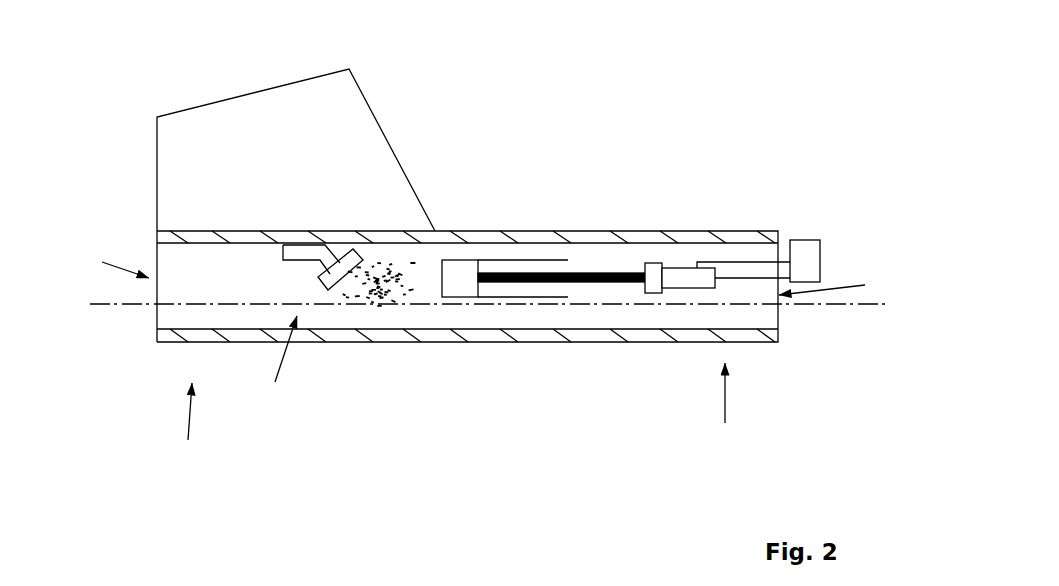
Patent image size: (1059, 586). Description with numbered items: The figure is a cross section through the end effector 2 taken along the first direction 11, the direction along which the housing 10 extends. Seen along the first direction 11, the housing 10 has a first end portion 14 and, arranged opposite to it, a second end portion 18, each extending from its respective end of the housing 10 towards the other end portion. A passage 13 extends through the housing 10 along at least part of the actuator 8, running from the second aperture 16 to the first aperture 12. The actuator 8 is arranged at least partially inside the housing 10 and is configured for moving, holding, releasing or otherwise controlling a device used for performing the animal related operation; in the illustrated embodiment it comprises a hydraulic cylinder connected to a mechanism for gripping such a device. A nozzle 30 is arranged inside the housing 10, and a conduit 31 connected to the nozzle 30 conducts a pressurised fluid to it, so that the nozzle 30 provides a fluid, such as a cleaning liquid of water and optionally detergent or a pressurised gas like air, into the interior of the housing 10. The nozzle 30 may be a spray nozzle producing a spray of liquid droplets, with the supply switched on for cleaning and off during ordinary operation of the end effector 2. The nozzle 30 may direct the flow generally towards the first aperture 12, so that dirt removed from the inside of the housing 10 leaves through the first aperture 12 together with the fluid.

The end effector 2 is at (661, 86).
The actuator 8 is at (530, 268).
The housing 10 is at (603, 337).
The first direction 11 is at (837, 307).
The first aperture 12 is at (840, 284).
The passage 13 is at (277, 367).
The first end portion 14 is at (728, 409).
The second aperture 16 is at (108, 258).
The second end portion 18 is at (189, 432).
The nozzle 30 is at (342, 267).
The conduit 31 is at (323, 242).